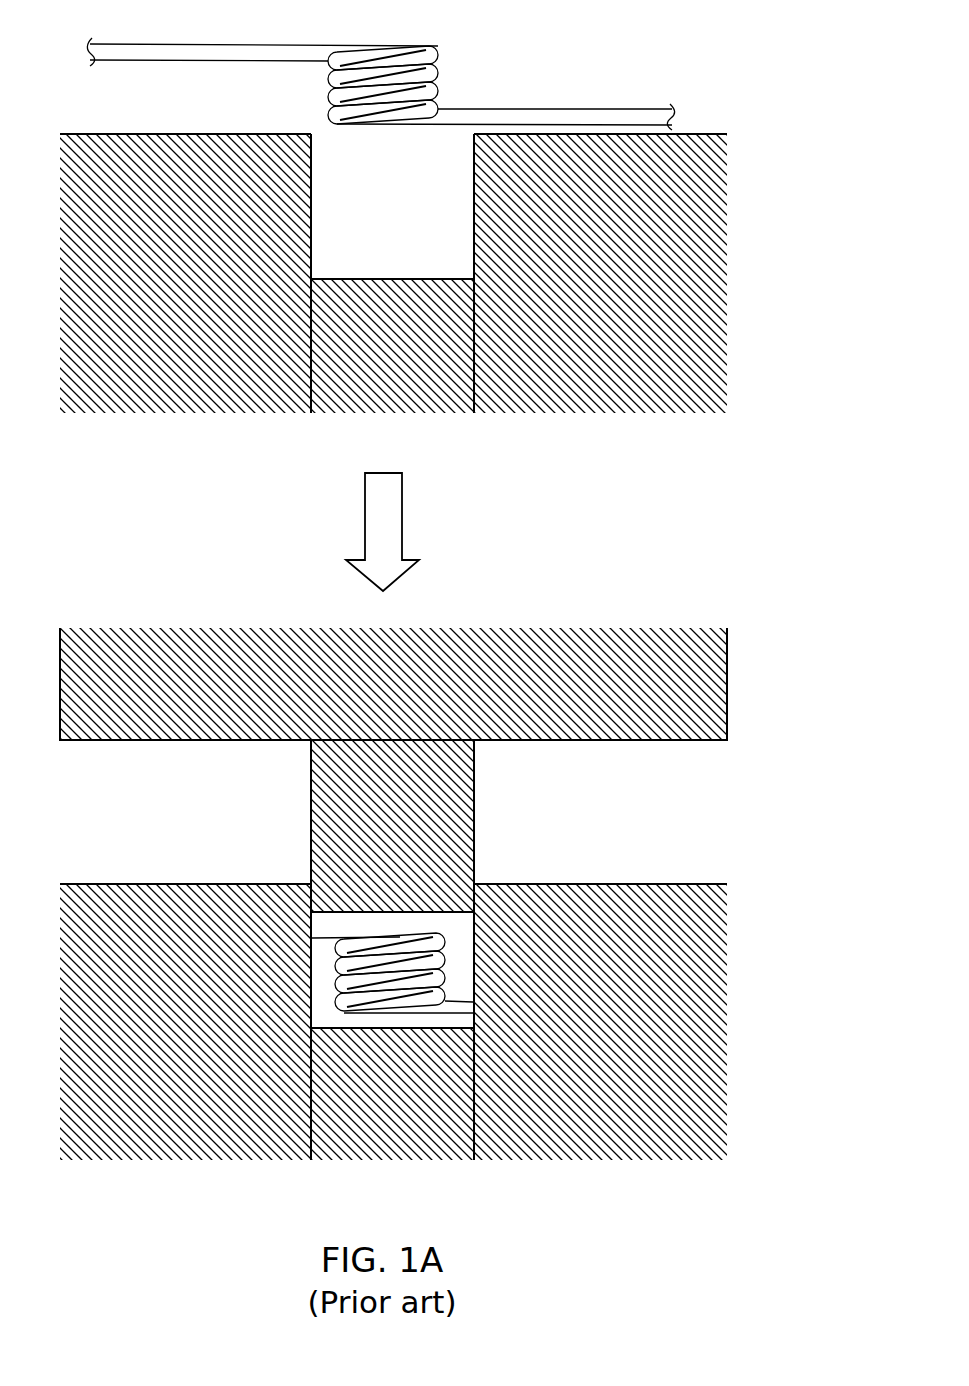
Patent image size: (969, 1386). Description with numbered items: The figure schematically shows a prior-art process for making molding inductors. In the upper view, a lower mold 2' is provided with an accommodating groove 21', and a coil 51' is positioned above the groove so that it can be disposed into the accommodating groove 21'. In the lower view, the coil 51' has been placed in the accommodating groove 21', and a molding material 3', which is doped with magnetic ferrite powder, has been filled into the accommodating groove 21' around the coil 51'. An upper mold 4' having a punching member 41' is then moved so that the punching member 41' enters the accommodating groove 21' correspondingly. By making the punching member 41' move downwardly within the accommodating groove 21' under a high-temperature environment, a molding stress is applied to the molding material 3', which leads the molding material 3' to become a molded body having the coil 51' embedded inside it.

The lower mold 2' is at (383, 681).
The accommodating groove 21' is at (338, 181).
The coil 51' is at (380, 511).
The upper mold 4' is at (393, 717).
The punching member 41' is at (430, 826).
The molding material 3' is at (442, 936).